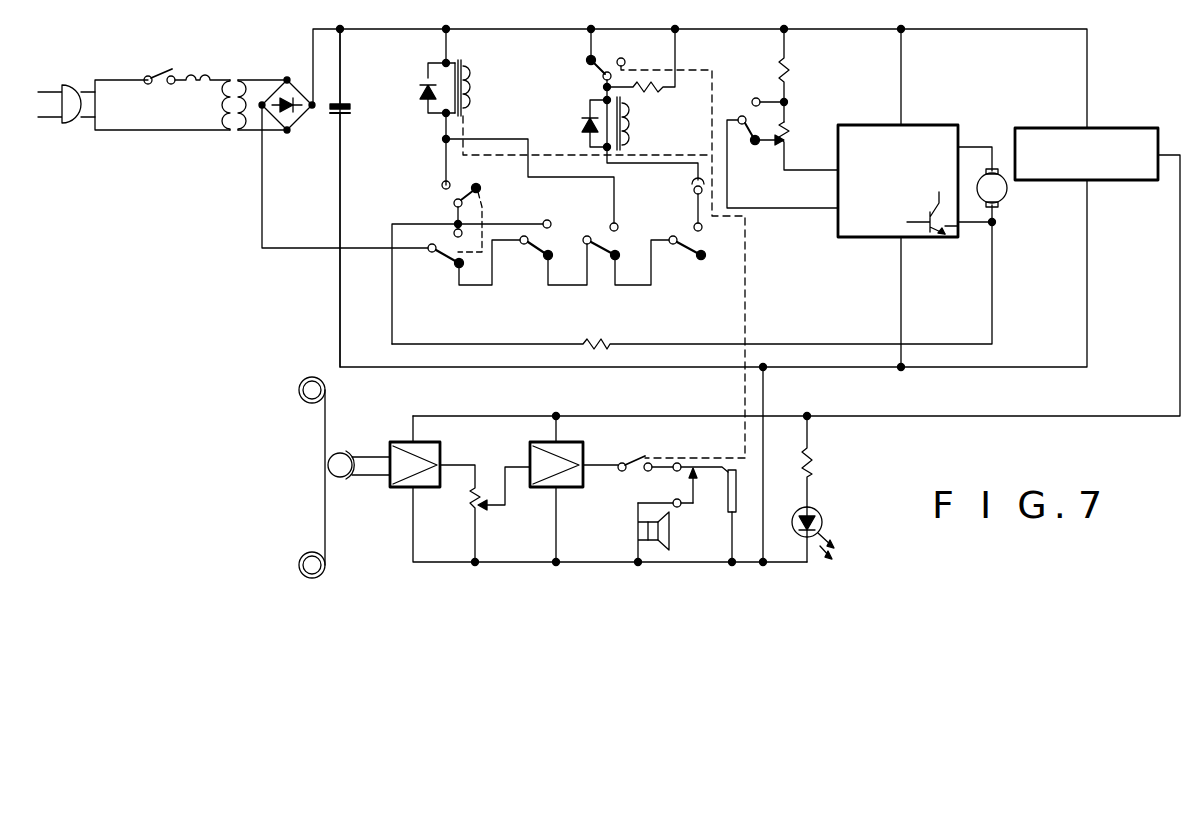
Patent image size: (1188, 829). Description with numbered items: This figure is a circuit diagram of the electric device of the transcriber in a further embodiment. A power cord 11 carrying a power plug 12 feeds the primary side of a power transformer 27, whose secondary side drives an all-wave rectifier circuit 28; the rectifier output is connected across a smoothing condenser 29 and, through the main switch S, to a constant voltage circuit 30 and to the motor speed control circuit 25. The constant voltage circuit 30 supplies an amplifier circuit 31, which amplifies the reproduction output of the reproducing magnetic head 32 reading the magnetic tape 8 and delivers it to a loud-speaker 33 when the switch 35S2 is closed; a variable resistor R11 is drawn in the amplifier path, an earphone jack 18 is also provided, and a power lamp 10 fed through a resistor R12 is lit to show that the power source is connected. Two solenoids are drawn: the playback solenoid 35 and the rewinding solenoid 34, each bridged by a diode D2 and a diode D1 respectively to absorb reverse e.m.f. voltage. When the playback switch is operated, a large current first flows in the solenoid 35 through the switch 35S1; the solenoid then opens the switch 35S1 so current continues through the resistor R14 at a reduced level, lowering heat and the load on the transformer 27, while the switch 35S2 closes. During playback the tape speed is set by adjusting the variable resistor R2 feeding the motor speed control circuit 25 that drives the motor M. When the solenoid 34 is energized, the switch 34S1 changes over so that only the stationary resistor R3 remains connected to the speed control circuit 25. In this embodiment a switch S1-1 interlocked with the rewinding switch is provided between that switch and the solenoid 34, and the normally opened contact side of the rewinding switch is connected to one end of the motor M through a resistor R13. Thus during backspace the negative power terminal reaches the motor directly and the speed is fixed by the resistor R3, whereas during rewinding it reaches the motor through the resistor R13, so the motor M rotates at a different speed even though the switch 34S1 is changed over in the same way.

The power cord 11 is at (112, 79).
The power plug 12 is at (66, 128).
The main switch S is at (159, 75).
The power transformer 27 is at (232, 77).
The all-wave rectifier circuit 28 is at (284, 77).
The smoothing condenser 29 is at (352, 110).
The diode D1 is at (426, 90).
The solenoid 34 is at (470, 90).
The switch interlocked with the rewinding switch S1-1 is at (475, 190).
The switch 35S1 is at (590, 68).
The resistor R14 is at (647, 79).
The diode D2 is at (586, 125).
The playback solenoid 35 is at (634, 125).
The stationary resistor R3 is at (790, 70).
The variable resistor R2 is at (790, 135).
The switch 34S1 is at (748, 132).
The motor speed control circuit 25 is at (937, 127).
The motor M is at (982, 186).
The constant voltage circuit 30 is at (1135, 127).
The resistor R13 is at (600, 341).
The magnetic tape 8 is at (327, 404).
The reproducing magnetic head 32 is at (348, 477).
The amplifier circuit 31 is at (450, 447).
The variable resistor R11 is at (470, 498).
The switch 35S2 is at (632, 452).
The earphone jack 18 is at (714, 473).
The loud-speaker 33 is at (670, 533).
The resistor R12 is at (813, 466).
The power lamp 10 is at (817, 516).